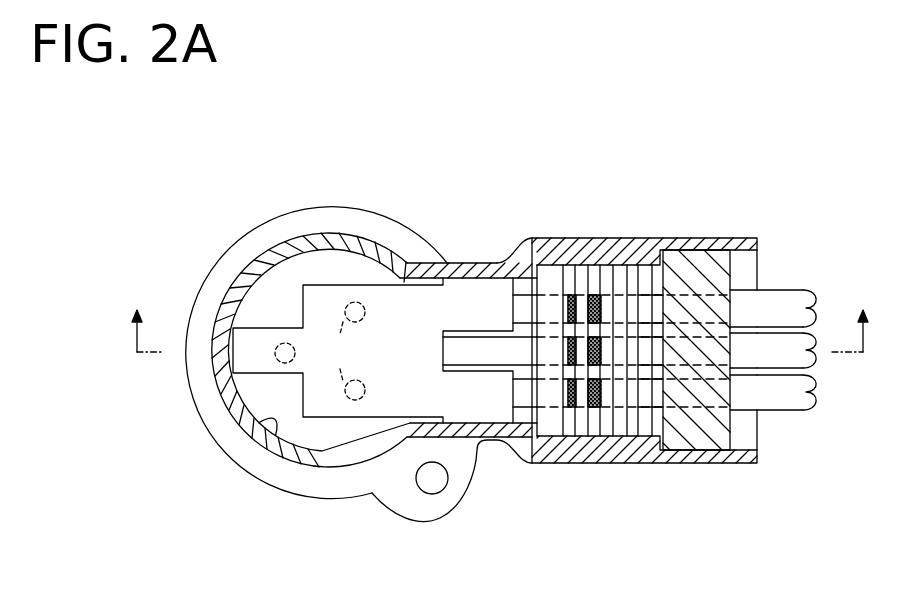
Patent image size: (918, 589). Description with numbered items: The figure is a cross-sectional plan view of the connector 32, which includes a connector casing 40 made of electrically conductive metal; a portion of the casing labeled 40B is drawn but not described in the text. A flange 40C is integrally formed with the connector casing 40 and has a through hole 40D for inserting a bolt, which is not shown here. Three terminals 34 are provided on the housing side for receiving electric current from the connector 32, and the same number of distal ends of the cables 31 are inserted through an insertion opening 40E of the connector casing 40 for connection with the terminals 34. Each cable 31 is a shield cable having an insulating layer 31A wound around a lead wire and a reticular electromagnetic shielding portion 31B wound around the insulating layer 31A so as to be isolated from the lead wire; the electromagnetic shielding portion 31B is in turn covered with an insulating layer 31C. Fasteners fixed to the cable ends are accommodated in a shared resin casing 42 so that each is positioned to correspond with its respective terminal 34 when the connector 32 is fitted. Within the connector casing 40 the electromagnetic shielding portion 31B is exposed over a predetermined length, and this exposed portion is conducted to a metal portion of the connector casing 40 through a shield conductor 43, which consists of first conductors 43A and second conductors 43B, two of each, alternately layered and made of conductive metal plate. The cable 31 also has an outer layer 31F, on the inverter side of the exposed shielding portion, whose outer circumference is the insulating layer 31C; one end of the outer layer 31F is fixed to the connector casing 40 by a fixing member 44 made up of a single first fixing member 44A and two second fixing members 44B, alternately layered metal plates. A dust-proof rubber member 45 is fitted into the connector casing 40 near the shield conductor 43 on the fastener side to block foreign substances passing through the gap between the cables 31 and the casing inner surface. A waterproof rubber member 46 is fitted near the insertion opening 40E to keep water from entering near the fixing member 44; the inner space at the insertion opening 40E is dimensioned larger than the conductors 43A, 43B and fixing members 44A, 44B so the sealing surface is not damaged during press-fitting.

The connector 32 is at (340, 178).
The connector casing 40 is at (270, 221).
The protrusion of housing 40B is at (266, 437).
The flange 40C is at (213, 270).
The through hole 40D is at (422, 487).
The insertion opening 40E is at (762, 452).
The resin casing 42 is at (303, 397).
The terminals 34 is at (296, 353).
The shield conductor 43 is at (670, 528).
The first conductors 43A is at (605, 412).
The second conductors 43B is at (572, 412).
The fixing member 44 is at (688, 160).
The first fixing member 44A is at (626, 300).
The second fixing members 44B is at (592, 275).
The dust-proof rubber member 45 is at (518, 262).
The rubber member 46 is at (723, 452).
The cables 31 is at (800, 290).
The insulating layer 31A is at (480, 346).
The electromagnetic shielding portion 31B is at (556, 392).
The insulating layer 31C is at (787, 367).
The outer layer 31F is at (778, 387).